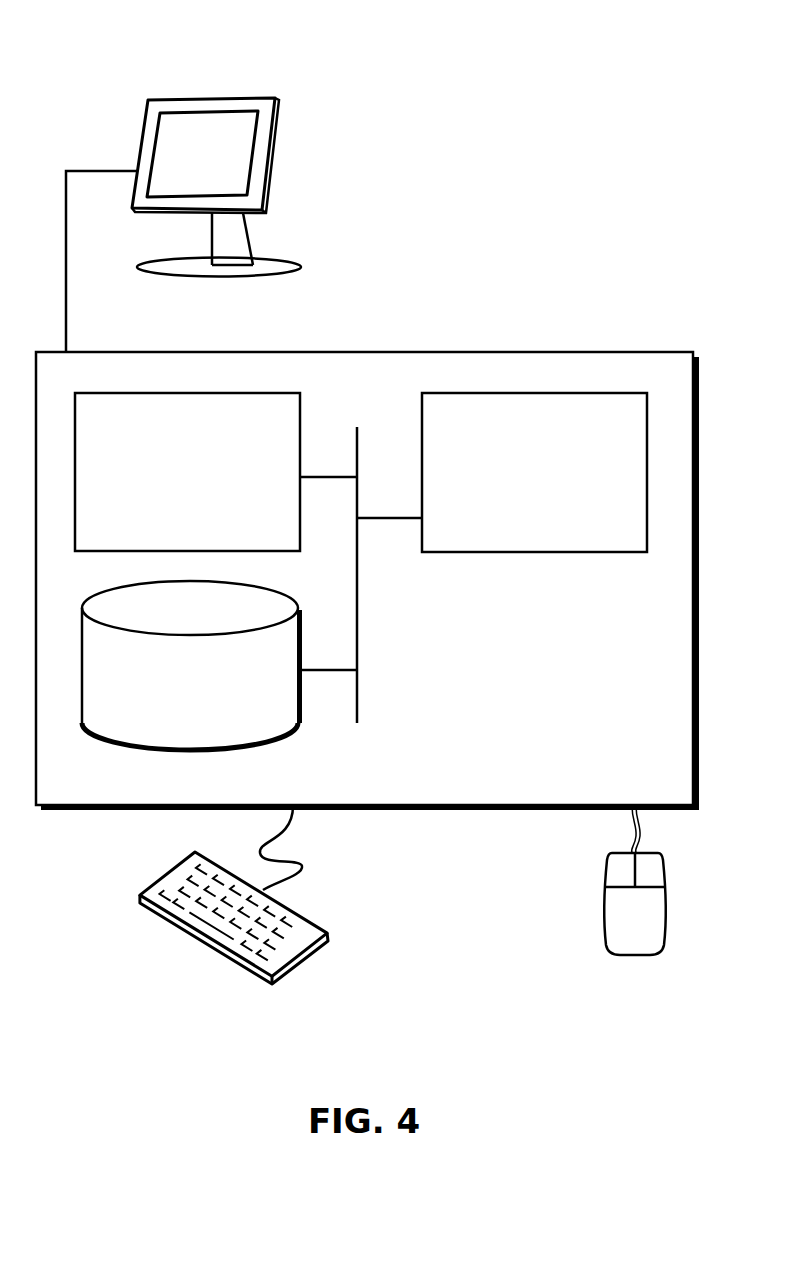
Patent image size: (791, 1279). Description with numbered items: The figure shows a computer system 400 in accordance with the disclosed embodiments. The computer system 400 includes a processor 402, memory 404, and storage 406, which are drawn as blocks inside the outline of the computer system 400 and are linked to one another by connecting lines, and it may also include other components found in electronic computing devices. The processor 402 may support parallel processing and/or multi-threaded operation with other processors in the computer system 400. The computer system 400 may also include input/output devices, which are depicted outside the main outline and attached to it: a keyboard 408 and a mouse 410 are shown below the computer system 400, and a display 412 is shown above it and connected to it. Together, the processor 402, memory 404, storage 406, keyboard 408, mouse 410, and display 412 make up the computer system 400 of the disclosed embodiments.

The computer system 400 is at (412, 328).
The processor 402 is at (514, 484).
The memory 404 is at (166, 484).
The storage 406 is at (170, 696).
The keyboard 408 is at (158, 915).
The mouse 410 is at (613, 926).
The display 412 is at (183, 225).